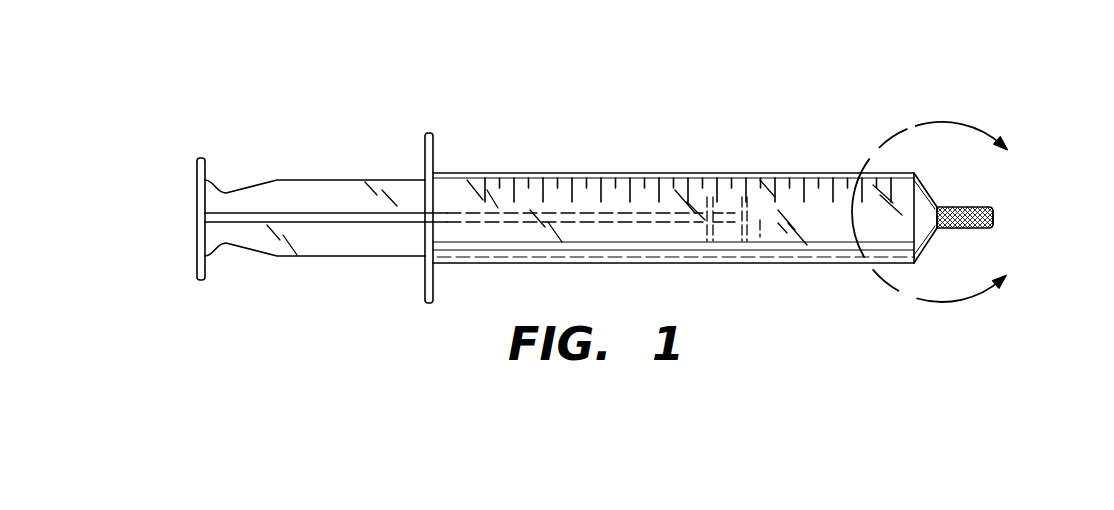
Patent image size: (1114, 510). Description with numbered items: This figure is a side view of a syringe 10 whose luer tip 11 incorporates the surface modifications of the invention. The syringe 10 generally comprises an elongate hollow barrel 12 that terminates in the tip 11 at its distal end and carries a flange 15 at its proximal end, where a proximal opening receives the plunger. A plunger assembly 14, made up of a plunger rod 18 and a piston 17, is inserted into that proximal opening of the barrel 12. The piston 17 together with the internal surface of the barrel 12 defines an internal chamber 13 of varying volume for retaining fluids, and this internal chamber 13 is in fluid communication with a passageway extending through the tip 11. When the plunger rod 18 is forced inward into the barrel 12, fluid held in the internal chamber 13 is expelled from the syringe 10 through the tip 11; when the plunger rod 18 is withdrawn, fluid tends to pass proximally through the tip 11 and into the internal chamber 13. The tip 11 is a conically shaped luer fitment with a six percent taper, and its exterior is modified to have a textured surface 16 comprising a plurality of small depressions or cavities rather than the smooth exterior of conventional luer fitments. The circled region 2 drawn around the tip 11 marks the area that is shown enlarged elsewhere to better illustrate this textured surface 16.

The syringe 10 is at (570, 67).
The barrel 12 is at (637, 175).
The internal chamber 13 is at (817, 228).
The plunger assembly 14 is at (318, 165).
The flange 15 is at (428, 133).
The textured surface 16 is at (968, 207).
The luer tip 11 is at (1000, 228).
The piston 17 is at (727, 237).
The plunger rod 18 is at (328, 243).
The region 2- 2 is at (937, 215).